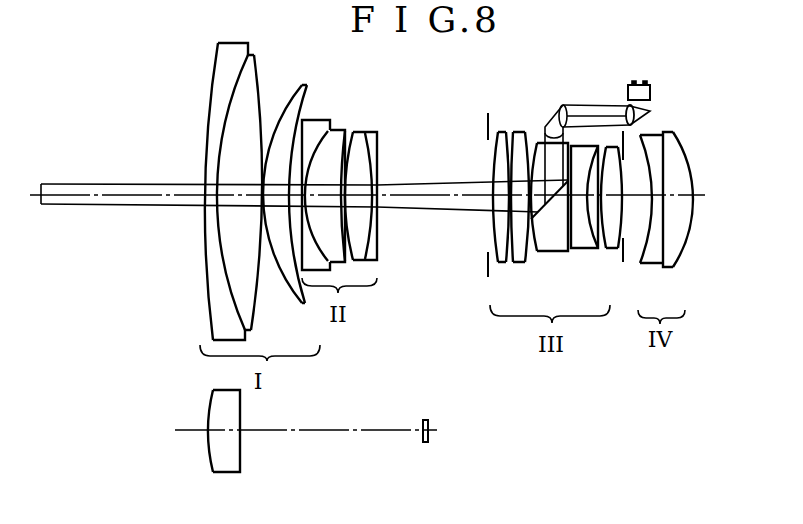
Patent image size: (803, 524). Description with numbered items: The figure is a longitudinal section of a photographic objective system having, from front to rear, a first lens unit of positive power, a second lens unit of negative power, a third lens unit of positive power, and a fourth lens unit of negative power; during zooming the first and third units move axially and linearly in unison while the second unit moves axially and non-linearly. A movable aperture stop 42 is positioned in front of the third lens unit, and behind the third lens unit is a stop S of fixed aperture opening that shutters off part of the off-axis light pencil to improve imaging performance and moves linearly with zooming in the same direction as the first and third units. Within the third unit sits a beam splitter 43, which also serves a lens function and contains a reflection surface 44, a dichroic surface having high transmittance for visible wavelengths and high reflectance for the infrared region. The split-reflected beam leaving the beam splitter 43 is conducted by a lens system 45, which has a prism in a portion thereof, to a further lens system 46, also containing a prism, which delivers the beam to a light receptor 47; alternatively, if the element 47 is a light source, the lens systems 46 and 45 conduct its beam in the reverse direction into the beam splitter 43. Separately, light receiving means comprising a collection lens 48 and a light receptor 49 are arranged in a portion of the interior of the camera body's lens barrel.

The aperture stop 42 is at (490, 120).
The beam splitter 43 is at (560, 252).
The reflection surface 44 is at (547, 218).
The lens system 45 is at (553, 108).
The lens system 46 is at (628, 106).
The light receptor 47 is at (650, 88).
The collection lens 48 is at (241, 416).
The light receptor 49 is at (428, 420).
The stop S is at (623, 255).